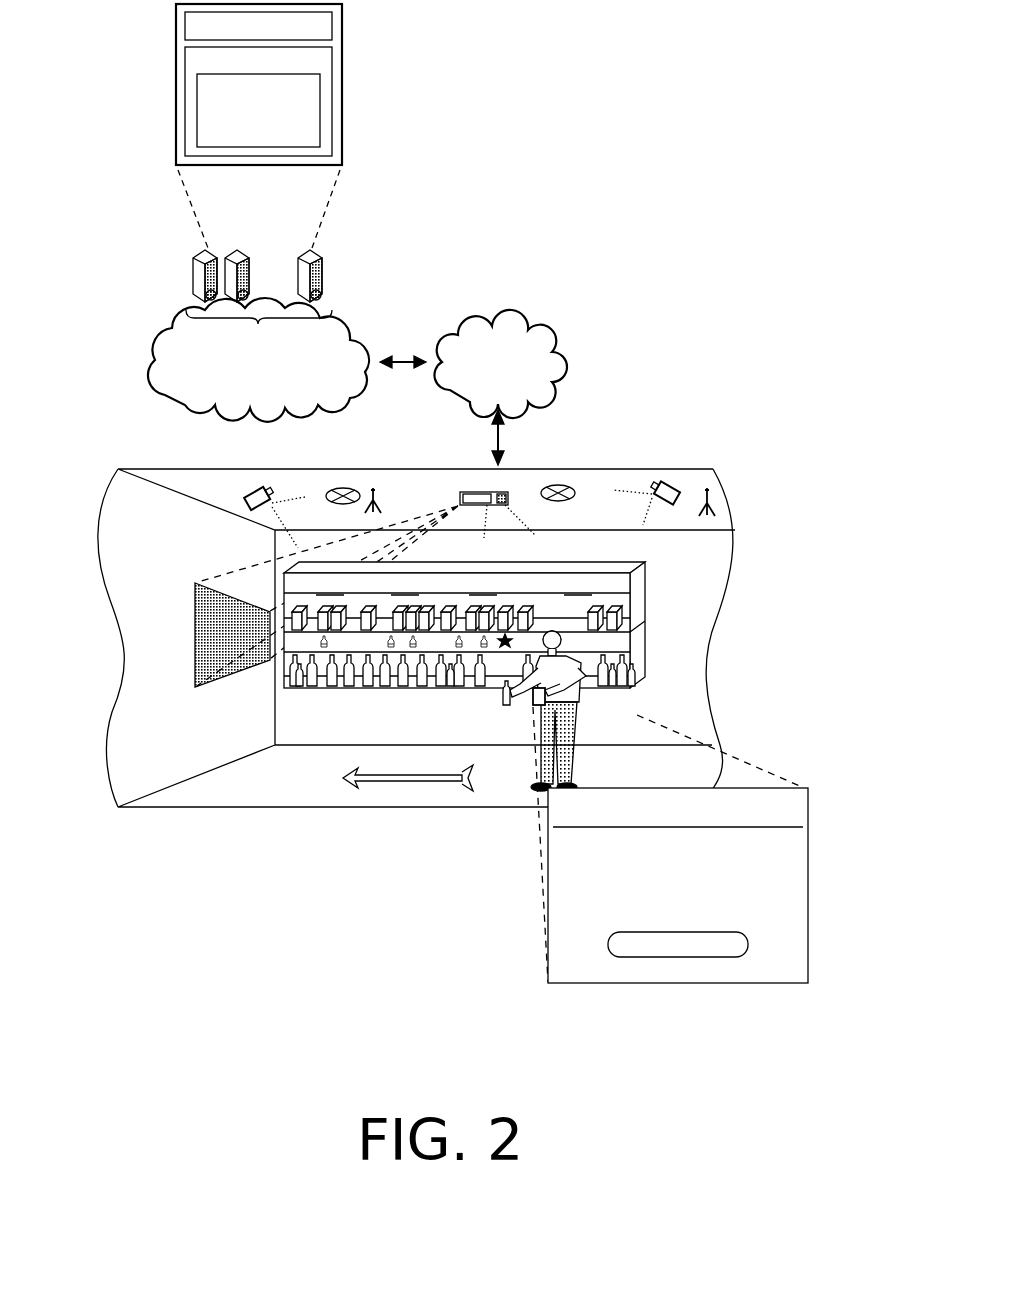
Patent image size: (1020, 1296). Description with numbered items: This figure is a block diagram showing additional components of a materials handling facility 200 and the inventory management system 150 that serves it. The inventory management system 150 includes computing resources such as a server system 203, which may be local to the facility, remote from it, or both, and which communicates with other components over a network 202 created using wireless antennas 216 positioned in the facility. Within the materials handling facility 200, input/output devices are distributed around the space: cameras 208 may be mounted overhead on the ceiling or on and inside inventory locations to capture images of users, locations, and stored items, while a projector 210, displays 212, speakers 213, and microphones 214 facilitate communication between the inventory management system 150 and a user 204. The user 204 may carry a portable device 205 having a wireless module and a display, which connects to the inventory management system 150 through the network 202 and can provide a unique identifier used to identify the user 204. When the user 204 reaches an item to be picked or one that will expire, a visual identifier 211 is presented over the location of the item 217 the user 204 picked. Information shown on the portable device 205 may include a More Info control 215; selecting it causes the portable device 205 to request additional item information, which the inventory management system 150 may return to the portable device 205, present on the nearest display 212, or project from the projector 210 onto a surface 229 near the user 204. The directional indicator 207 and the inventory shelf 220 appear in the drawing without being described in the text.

The inventory management system 150 is at (258, 110).
The materials handling facility 200 is at (713, 468).
The network 202 is at (500, 364).
The server system 203 is at (258, 213).
The user 204 is at (627, 841).
The portable device 205 is at (533, 706).
The directional indicator 207 is at (350, 786).
The cameras 208 is at (257, 488).
The projector 210 is at (483, 492).
The visual identifier 211 is at (503, 645).
The displays 212 is at (454, 586).
The speakers 213 is at (558, 486).
The microphones 214 is at (328, 488).
The More Info control 215 is at (610, 947).
The wireless antennas 216 is at (370, 490).
The item 217 is at (502, 702).
The inventory shelf 220 is at (400, 689).
The surface 229 is at (155, 755).